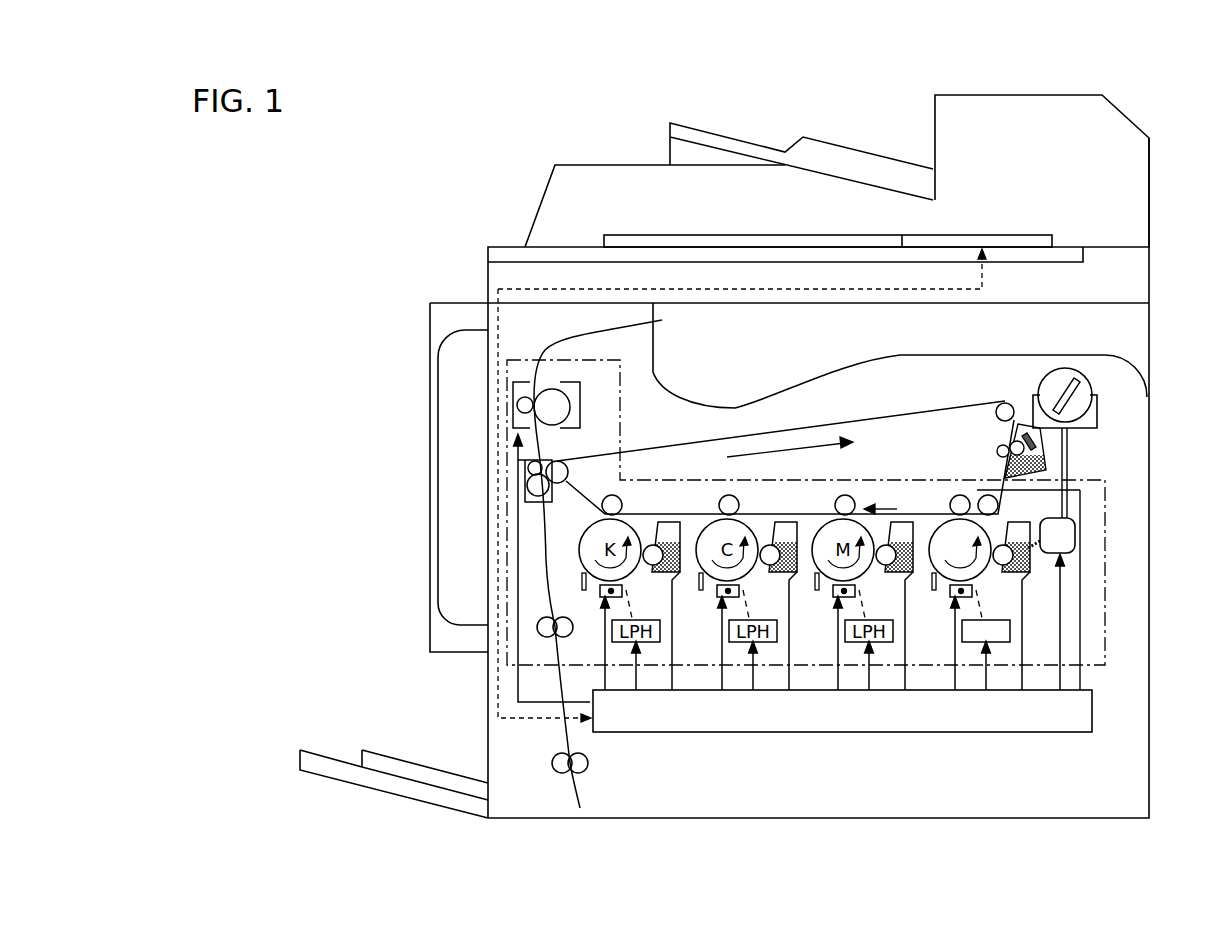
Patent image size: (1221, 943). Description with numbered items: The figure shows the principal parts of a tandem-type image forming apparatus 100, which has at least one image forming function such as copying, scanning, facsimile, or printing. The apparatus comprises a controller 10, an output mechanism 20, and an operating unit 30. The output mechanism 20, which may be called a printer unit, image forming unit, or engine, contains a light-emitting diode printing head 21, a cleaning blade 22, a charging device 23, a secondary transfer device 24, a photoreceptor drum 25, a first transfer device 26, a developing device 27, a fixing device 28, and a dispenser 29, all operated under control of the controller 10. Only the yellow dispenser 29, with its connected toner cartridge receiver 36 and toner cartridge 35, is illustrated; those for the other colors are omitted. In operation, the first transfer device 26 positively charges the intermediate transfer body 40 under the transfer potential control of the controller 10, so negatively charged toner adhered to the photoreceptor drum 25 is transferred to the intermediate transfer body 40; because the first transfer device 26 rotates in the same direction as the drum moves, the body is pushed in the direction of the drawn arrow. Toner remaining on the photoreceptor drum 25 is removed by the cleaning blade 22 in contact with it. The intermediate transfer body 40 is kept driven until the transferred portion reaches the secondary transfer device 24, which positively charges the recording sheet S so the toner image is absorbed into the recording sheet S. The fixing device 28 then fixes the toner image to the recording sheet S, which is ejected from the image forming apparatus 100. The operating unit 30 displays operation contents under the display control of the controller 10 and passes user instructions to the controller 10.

The image forming apparatus 100 is at (415, 145).
The controller 10 is at (1092, 700).
The output mechanism 20 is at (1108, 568).
The light-emitting diode printing head 21 is at (1008, 655).
The cleaning blade 22 is at (950, 578).
The charging device 23 is at (955, 637).
The secondary transfer device 24 is at (540, 503).
The photoreceptor drum 25 is at (942, 512).
The first transfer device 26 is at (950, 494).
The developing device 27 is at (1010, 606).
The fixing device 28 is at (582, 397).
The dispenser 29 is at (1077, 528).
The operating unit 30 is at (1020, 243).
The toner cartridge 35 is at (1053, 391).
The toner cartridge receiver 36 is at (1097, 405).
The intermediate transfer body 40 is at (645, 449).
The recording sheet S is at (573, 343).